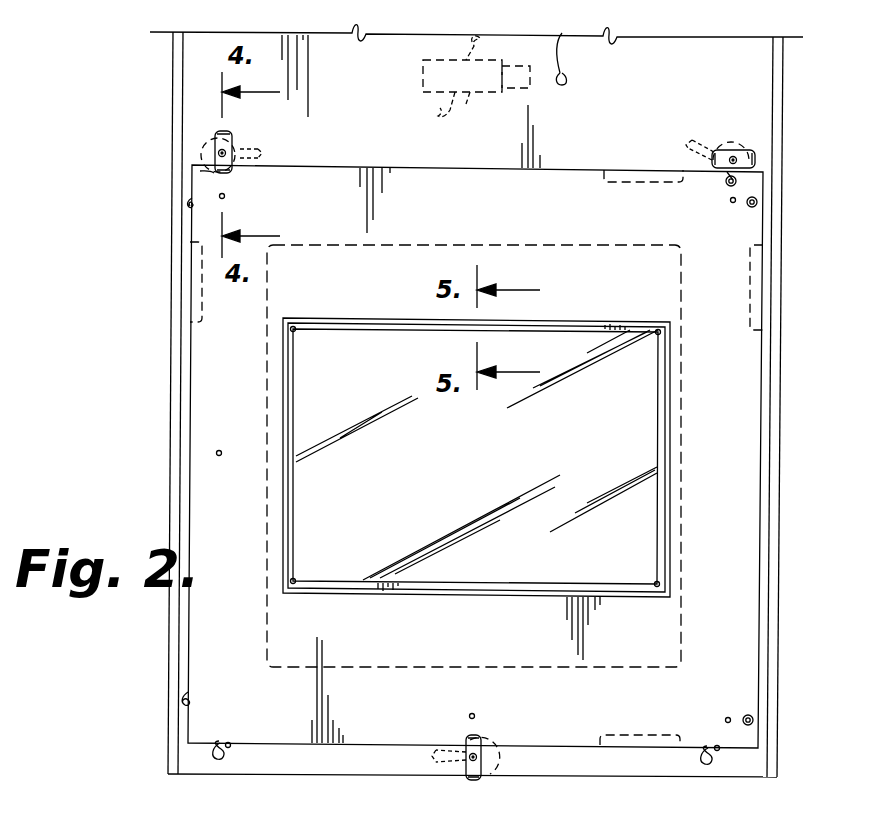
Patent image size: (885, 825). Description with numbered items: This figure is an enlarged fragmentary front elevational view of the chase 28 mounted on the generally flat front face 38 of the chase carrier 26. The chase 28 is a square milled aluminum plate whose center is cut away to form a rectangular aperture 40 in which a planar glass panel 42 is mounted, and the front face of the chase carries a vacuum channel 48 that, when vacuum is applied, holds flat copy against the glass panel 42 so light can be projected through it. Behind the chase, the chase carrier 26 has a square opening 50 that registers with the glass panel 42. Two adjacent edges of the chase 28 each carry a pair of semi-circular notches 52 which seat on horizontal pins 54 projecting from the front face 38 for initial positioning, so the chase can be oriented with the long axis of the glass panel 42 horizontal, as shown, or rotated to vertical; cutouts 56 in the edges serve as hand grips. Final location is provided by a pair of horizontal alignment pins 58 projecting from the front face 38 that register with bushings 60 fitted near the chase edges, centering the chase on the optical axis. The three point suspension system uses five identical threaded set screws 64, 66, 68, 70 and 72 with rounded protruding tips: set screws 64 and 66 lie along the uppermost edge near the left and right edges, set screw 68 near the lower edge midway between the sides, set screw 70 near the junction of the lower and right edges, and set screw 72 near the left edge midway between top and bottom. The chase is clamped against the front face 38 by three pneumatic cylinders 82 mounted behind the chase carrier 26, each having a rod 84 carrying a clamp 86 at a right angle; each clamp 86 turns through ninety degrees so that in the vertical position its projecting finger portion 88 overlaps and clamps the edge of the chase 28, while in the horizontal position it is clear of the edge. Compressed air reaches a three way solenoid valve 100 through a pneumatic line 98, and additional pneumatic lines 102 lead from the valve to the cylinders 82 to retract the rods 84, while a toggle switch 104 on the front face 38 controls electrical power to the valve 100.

The chase carrier 26 is at (784, 90).
The chase 28 is at (573, 172).
The front face 38 is at (706, 66).
The rectangular aperture 40 is at (660, 372).
The glass panel 42 is at (640, 444).
The vacuum channel 48 is at (573, 322).
The square opening 50 is at (448, 666).
The semi-circular notches 52 is at (190, 202).
The horizontal pins 54 is at (228, 745).
The cutouts 56 is at (197, 268).
The alignment pins 58 is at (227, 174).
The bushings 60 is at (210, 176).
The set screw 64 is at (224, 198).
The set screw 66 is at (732, 203).
The set screw 68 is at (472, 713).
The set screw 70 is at (728, 717).
The set screw 72 is at (219, 456).
The pneumatic cylinders 82 is at (240, 146).
The rod 84 is at (220, 152).
The clamp 86 is at (220, 132).
The finger portion 88 is at (233, 168).
The pneumatic line 98 is at (470, 38).
The three way solenoid valve 100 is at (472, 94).
The pneumatic lines 102 is at (447, 106).
The toggle switch 104 is at (562, 38).